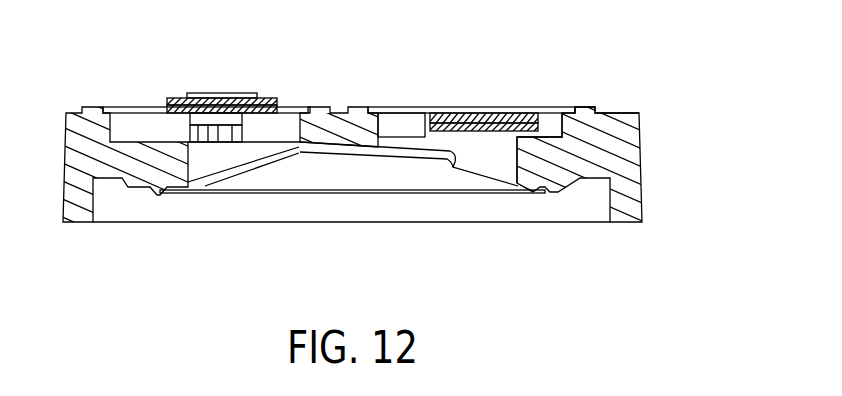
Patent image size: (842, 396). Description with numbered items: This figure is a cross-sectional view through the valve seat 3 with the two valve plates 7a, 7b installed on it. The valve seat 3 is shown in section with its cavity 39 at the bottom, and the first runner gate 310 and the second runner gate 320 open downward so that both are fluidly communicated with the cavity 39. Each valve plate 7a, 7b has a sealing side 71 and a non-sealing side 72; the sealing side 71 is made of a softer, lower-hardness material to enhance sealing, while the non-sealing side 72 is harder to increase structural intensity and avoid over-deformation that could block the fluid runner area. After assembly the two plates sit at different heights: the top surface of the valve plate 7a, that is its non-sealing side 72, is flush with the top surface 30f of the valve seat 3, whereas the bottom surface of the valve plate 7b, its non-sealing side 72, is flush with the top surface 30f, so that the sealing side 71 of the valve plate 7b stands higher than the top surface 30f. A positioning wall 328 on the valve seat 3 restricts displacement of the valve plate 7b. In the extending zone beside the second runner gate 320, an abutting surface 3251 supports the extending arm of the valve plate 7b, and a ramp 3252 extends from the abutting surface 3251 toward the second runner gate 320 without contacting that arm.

The valve seat 3 is at (652, 157).
The top surface of the valve seat 30f is at (620, 112).
The valve plate 7a is at (527, 100).
The valve plate 7b is at (175, 90).
The sealing side 71 is at (277, 101).
The non-sealing side 72 is at (222, 112).
The positioning wall 328 is at (192, 93).
The abutting surface 3251 is at (229, 118).
The ramp 3252 is at (203, 122).
The second runner gate 320 is at (277, 138).
The first runner gate 310 is at (484, 158).
The cavity 39 is at (354, 218).